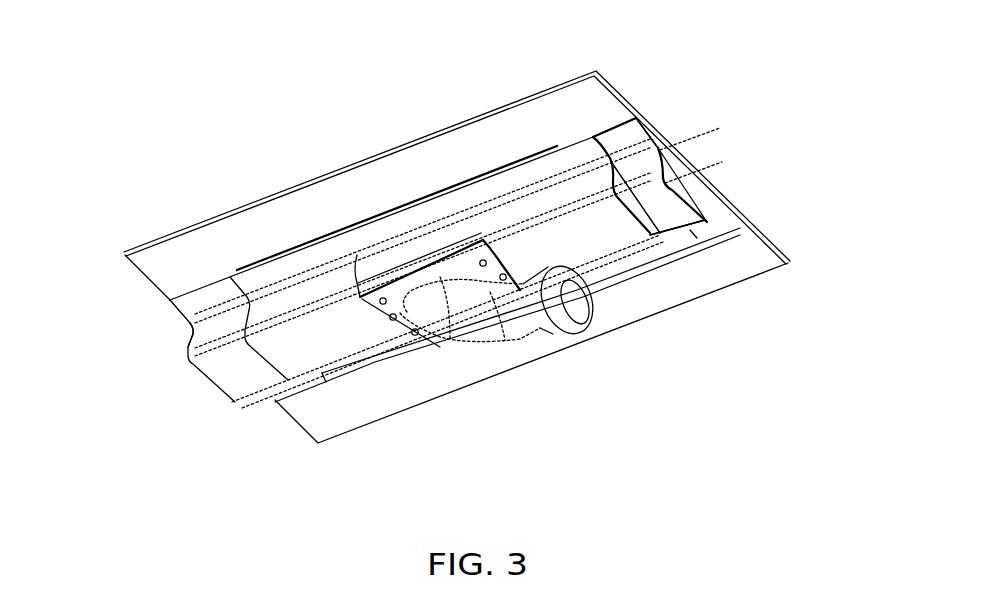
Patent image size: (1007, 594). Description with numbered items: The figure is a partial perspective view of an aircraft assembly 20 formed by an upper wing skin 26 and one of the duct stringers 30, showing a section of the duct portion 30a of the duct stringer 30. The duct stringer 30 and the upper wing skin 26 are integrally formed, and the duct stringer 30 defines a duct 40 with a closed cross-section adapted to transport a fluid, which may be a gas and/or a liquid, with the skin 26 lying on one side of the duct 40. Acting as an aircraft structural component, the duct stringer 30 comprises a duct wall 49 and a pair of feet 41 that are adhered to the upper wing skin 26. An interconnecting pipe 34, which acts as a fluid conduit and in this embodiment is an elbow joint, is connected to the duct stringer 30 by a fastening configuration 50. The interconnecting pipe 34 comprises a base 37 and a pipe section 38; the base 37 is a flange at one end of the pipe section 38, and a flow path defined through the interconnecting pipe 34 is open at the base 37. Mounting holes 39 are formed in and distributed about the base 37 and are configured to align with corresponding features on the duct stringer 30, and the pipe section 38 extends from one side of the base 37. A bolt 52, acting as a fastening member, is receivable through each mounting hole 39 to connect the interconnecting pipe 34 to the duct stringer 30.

The vehicle body structure assembly 20 is at (754, 68).
The upper wing skin 26 is at (393, 163).
The duct stringer 30 is at (213, 368).
The duct portion 30a is at (197, 335).
The interconnecting pipe 34 is at (512, 330).
The base 37 is at (468, 244).
The pipe section 38 is at (470, 330).
The mounting holes 39 is at (393, 322).
The duct 40 is at (680, 180).
The feet 41 is at (620, 137).
The duct wall 49 is at (668, 218).
The fastening configuration 50 is at (415, 336).
The bolt 52 is at (370, 268).